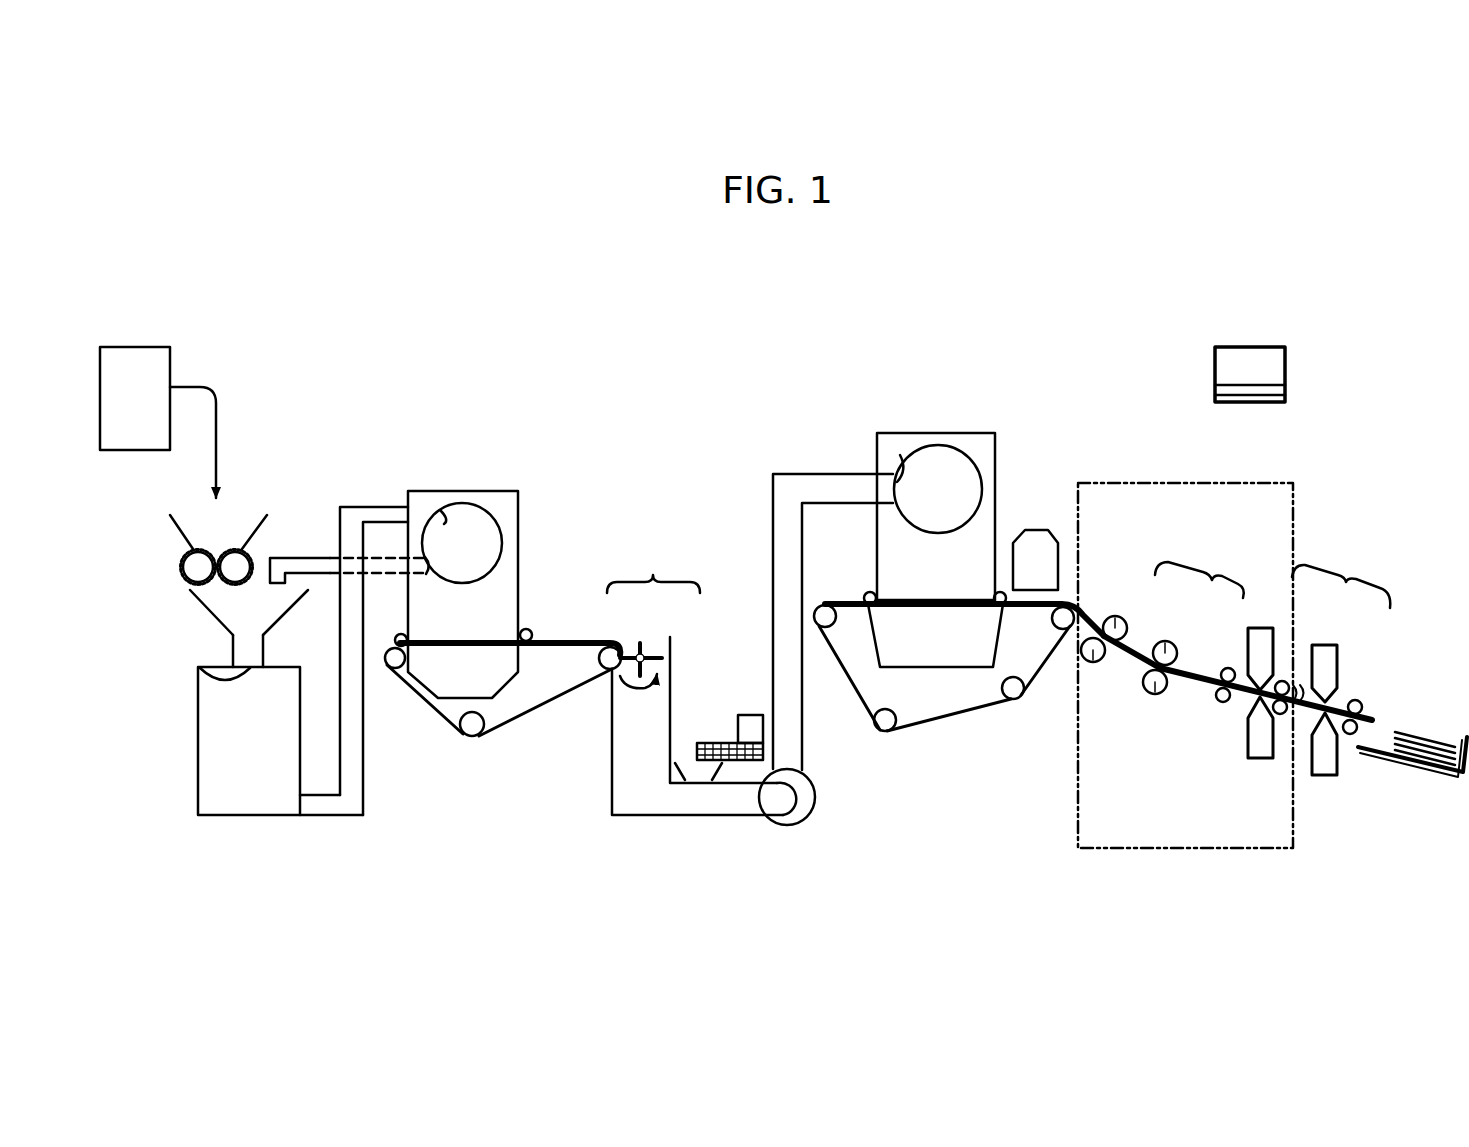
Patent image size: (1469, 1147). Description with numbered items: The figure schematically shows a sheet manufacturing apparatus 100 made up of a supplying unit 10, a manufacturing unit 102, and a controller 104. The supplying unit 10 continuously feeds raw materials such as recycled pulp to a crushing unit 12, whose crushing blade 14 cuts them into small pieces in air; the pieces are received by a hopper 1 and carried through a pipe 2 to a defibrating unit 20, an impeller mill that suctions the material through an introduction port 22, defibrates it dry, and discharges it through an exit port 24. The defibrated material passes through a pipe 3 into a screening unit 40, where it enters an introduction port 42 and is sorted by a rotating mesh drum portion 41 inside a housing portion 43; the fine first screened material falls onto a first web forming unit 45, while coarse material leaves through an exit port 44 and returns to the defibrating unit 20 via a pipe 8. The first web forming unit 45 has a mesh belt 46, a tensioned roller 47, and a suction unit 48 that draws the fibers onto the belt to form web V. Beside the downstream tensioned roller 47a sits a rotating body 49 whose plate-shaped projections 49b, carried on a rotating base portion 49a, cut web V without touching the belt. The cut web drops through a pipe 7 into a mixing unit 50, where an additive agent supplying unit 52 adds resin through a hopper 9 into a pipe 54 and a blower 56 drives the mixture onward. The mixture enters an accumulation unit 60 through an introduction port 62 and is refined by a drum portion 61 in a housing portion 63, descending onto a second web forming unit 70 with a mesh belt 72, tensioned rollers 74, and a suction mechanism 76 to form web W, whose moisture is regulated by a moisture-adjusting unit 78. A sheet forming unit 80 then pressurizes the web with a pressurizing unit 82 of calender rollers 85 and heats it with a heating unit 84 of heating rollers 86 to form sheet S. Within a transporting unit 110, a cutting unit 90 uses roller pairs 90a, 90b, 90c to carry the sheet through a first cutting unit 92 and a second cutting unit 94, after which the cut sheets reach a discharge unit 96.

The hopper 1 is at (200, 608).
The pipe 2 is at (230, 650).
The pipe 3 is at (352, 653).
The pipe 7 is at (656, 730).
The pipe 8 is at (323, 563).
The hopper 9 is at (670, 778).
The supplying unit 10 is at (173, 341).
The crushing unit 12 is at (182, 537).
The crushing blade 14 is at (200, 567).
The defibrating unit 20 is at (248, 774).
The introduction port 22 is at (203, 668).
The exit port 24 is at (300, 797).
The screening unit 40 is at (490, 567).
The drum portion 41 is at (503, 543).
The introduction port 42 is at (440, 518).
The housing portion 43 is at (518, 516).
The exit port 44 is at (428, 562).
The first web forming unit 45 is at (494, 717).
The mesh belt 46 is at (525, 718).
The tensioned roller 47 is at (393, 670).
The tensioned roller 47a is at (606, 670).
The suction unit 48 is at (453, 685).
The rotating body 49 is at (656, 612).
The base portion 49a is at (646, 653).
The projection 49b is at (640, 640).
The mixing unit 50 is at (818, 822).
The additive agent supplying unit 52 is at (750, 715).
The pipe 54 is at (734, 679).
The blower 56 is at (802, 808).
The accumulation unit 60 is at (983, 488).
The drum portion 61 is at (982, 481).
The introduction port 62 is at (900, 455).
The housing portion 63 is at (995, 453).
The second web forming unit 70 is at (959, 676).
The mesh belt 72 is at (868, 596).
The tensioned roller 74 is at (824, 628).
The suction mechanism 76 is at (928, 643).
The moisture-adjusting unit 78 is at (1040, 548).
The sheet forming unit 80 is at (1162, 649).
The pressurizing unit 82 is at (1131, 639).
The heating unit 84 is at (1186, 676).
The calender roller 85 is at (1112, 618).
The heating roller 86 is at (1160, 642).
The cutting unit 90 is at (1290, 690).
The pair of rollers 90a is at (1221, 714).
The pair of rollers 90b is at (1282, 728).
The pair of rollers 90c is at (1349, 748).
The first cutting unit 92 is at (1273, 622).
The second cutting unit 94 is at (1331, 640).
The discharge unit 96 is at (1413, 758).
The sheet manufacturing apparatus 100 is at (1199, 267).
The manufacturing unit 102 is at (1096, 343).
The controller 104 is at (1268, 357).
The transporting unit 110 is at (1253, 484).